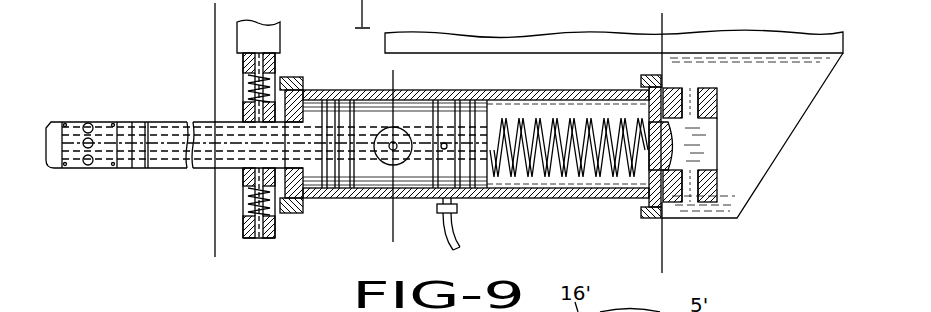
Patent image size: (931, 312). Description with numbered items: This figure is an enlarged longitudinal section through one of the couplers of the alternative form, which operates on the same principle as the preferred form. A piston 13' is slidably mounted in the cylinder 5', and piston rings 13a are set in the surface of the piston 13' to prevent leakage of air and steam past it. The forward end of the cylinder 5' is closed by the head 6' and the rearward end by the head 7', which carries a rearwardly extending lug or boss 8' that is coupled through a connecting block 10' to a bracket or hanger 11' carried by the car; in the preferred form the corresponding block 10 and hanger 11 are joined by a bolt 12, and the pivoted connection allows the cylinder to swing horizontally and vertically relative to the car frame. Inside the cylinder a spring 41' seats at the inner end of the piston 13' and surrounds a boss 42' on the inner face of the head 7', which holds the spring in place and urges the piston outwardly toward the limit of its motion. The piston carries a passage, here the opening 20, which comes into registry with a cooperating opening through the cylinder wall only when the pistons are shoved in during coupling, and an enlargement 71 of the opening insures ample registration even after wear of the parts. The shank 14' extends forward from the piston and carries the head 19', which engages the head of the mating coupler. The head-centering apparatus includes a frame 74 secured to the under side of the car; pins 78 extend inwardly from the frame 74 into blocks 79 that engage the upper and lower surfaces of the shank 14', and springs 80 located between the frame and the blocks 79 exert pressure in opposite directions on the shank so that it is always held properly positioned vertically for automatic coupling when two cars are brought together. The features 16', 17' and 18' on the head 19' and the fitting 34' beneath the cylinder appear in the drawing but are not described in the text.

The bracket or hanger 11 is at (245, 138).
The block 10 is at (417, 159).
The bolt 12 is at (662, 13).
The shank 14' is at (274, 176).
The head 19' is at (80, 173).
The upper hole 16' is at (75, 99).
The middle hole 17' is at (118, 110).
The lower hole 18' is at (105, 185).
The frame 74 is at (277, 64).
The pins 78 is at (243, 229).
The springs 80 is at (250, 200).
The blocks 79 is at (250, 181).
The forward head 6' is at (294, 169).
The cylinder 5' is at (476, 165).
The piston 13' is at (395, 175).
The piston rings 13a is at (457, 100).
The enlargement 71 is at (404, 144).
The opening 20 is at (396, 150).
The spring 41' is at (569, 182).
The fluid pipe 34' is at (476, 224).
The rearward head 7' is at (650, 178).
The boss 42' is at (640, 181).
The bracket or hanger 11' is at (614, 124).
The block 10' is at (720, 144).
The lug or boss 8' is at (720, 144).